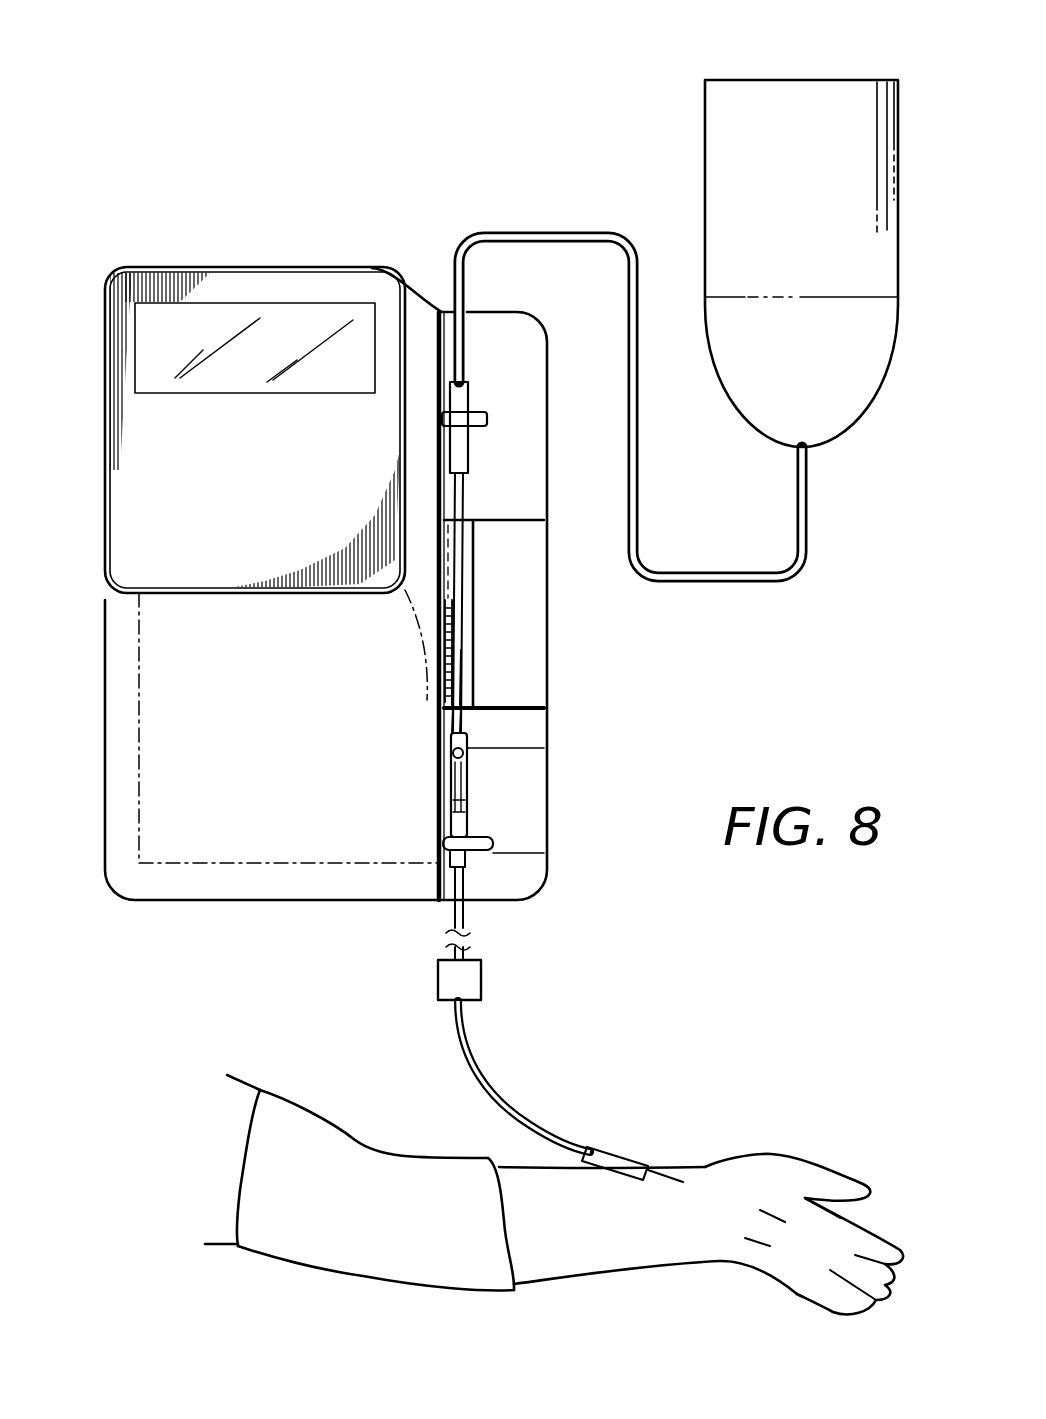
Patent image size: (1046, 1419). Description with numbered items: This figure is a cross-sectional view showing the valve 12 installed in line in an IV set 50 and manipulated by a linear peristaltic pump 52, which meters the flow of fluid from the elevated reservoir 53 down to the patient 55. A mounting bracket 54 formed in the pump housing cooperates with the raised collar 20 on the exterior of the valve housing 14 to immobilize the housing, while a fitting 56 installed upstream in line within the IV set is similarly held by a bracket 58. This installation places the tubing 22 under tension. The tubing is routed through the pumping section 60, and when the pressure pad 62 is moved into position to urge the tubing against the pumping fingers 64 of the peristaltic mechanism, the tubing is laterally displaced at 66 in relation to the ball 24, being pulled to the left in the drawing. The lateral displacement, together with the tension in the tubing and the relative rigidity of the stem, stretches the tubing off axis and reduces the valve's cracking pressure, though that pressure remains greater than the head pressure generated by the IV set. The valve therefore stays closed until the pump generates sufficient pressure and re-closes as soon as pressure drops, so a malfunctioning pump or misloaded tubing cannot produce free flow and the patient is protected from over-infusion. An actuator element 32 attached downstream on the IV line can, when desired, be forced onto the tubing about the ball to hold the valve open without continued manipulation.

The valve 12 is at (482, 768).
The housing 14 is at (436, 862).
The collar 20 is at (475, 851).
The tubing 22 is at (446, 728).
The ball 24 is at (452, 757).
The actuator element 32 is at (482, 983).
The IV set 50 is at (559, 232).
The linear peristaltic pump 52 is at (314, 203).
The elevated reservoir 53 is at (832, 100).
The mounting bracket 54 is at (517, 853).
The patient 55 is at (409, 1180).
The fitting 56 is at (486, 410).
The bracket 58 is at (487, 430).
The pumping section 60 is at (520, 622).
The pressure pad 62 is at (463, 680).
The pumping fingers 64 is at (447, 648).
The lateral displacement location 66 is at (466, 720).